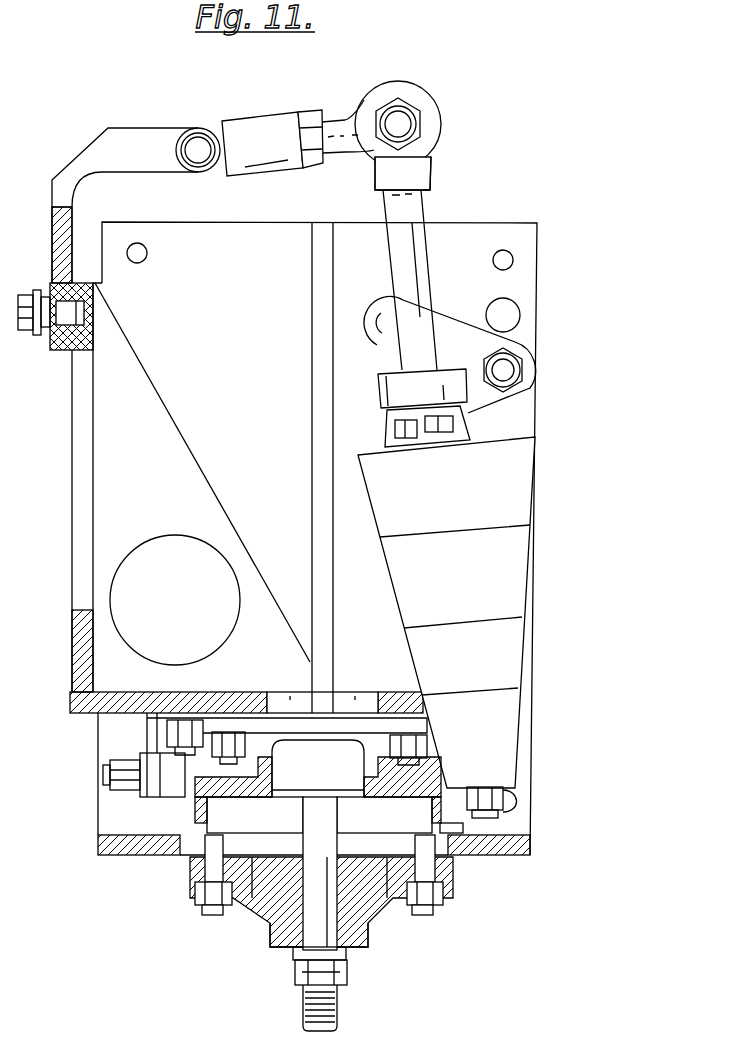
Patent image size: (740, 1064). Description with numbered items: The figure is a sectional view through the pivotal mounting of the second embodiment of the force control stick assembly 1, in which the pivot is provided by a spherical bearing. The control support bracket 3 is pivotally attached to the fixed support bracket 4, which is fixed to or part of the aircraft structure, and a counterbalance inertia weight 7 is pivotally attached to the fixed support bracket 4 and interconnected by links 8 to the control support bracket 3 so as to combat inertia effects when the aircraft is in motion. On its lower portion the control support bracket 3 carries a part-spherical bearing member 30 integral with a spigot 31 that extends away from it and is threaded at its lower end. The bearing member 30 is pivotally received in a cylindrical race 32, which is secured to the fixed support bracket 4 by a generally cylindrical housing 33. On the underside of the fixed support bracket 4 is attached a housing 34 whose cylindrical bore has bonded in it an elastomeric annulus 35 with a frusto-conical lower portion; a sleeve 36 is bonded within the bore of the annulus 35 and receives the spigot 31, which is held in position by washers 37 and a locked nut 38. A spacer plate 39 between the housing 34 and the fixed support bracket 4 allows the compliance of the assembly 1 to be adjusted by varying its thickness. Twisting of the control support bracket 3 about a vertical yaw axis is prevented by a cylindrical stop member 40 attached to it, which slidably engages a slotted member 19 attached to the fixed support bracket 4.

The force control stick assembly 1 is at (485, 223).
The control support bracket 3 is at (160, 415).
The fixed support bracket 4 is at (523, 855).
The counterbalance inertia weight 7 is at (517, 496).
The links 8 is at (258, 128).
The slotted member 19 is at (172, 826).
The part-spherical bearing member 30 is at (294, 800).
The spigot 31 is at (325, 830).
The cylindrical race 32 is at (259, 797).
The cylindrical housing 33 is at (490, 783).
The housing 34 is at (393, 905).
The elastomeric annulus 35 is at (393, 908).
The sleeve 36 is at (270, 915).
The washers 37 is at (297, 953).
The locked nut 38 is at (300, 985).
The spacer plate 39 is at (457, 863).
The cylindrical stop member 40 is at (162, 783).